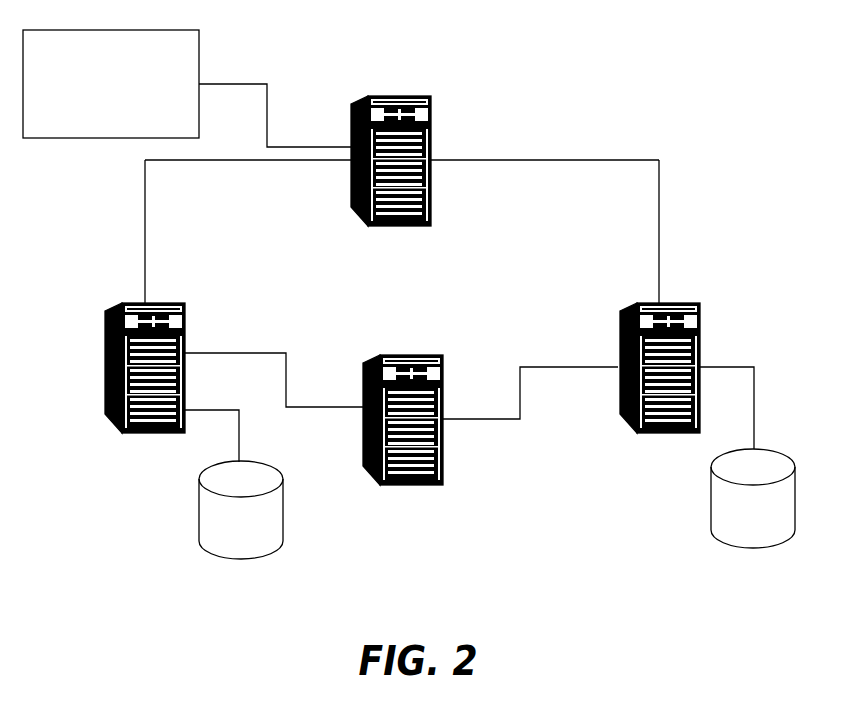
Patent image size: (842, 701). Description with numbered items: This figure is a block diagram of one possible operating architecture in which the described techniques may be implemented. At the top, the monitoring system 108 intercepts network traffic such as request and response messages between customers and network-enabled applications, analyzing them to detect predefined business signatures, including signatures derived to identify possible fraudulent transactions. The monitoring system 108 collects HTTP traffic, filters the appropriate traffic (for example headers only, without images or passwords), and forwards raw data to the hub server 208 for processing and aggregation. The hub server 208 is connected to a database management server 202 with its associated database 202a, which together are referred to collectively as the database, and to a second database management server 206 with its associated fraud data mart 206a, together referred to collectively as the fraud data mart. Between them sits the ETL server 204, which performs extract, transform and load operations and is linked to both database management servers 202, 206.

The monitoring system 108 is at (93, 123).
The database management server 202 is at (105, 330).
The database 202a is at (198, 510).
The ETL server 204 is at (363, 380).
The database management server 206 is at (618, 328).
The fraud data mart 206a is at (711, 498).
The hub server 208 is at (352, 121).